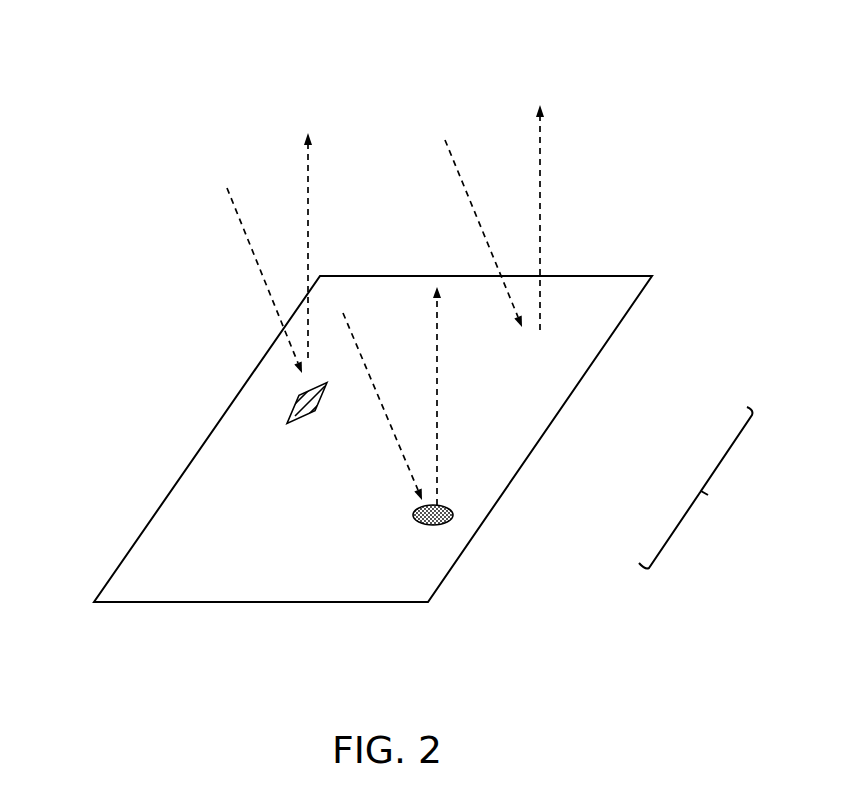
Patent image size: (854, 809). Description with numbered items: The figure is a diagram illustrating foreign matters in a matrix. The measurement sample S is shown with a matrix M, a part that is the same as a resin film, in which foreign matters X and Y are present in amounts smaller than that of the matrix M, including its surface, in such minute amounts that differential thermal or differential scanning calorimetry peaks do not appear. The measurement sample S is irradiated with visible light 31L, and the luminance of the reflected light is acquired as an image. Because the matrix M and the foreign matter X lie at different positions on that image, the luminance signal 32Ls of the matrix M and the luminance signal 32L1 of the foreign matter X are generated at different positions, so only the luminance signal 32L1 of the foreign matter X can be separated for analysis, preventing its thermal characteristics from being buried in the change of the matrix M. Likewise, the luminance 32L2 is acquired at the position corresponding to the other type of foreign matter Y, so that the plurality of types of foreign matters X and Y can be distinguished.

The visible light 31L is at (240, 225).
The luminance signal 32L1 is at (438, 408).
The luminance 32L2 is at (309, 176).
The luminance signal 32Ls is at (542, 175).
The matrix M is at (545, 352).
The measurement sample S is at (695, 487).
The foreign matter X is at (452, 523).
The foreign matter Y is at (303, 387).